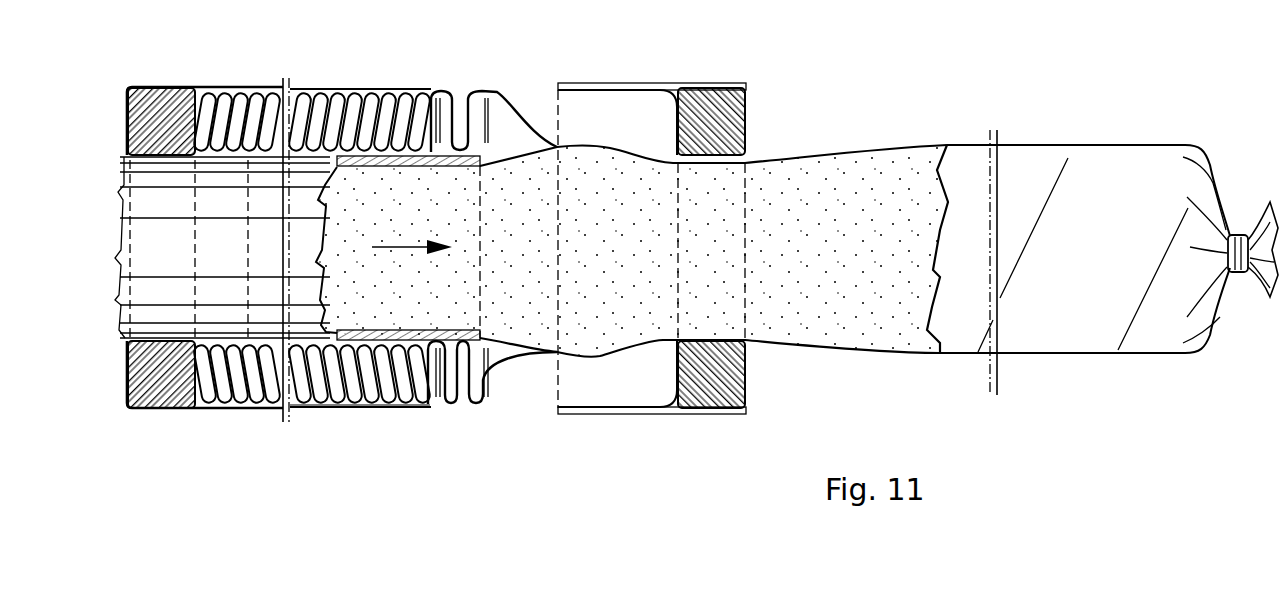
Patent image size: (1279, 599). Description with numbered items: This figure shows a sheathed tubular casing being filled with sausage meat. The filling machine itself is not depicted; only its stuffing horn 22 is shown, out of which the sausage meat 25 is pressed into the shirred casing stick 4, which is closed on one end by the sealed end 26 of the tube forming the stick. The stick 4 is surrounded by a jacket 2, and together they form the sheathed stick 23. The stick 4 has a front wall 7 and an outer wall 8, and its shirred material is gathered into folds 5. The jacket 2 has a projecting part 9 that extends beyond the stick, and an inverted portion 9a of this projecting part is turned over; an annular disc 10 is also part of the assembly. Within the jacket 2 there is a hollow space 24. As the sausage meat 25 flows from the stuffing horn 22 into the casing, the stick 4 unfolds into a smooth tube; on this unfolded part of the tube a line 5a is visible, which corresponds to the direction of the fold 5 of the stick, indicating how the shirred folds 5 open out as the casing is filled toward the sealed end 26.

The jacket 2 is at (460, 86).
The stick 4 is at (430, 366).
The folds of the stick 5 is at (417, 90).
The line on the unfolded tube 5a is at (255, 405).
The front wall of the stick 7 is at (207, 98).
The outer wall of the stick 8 is at (374, 410).
The projecting part of the jacket 9 is at (638, 92).
The inverted portion of the projecting part of the jacket 9a is at (246, 78).
The annular disc 10 is at (158, 95).
The stuffing horn 22 is at (297, 250).
The sheathed stick 23 is at (315, 412).
The hollow space in the jacket 24 is at (577, 250).
The sausage meat 25 is at (632, 249).
The sealed end of the tube 26 is at (1234, 270).